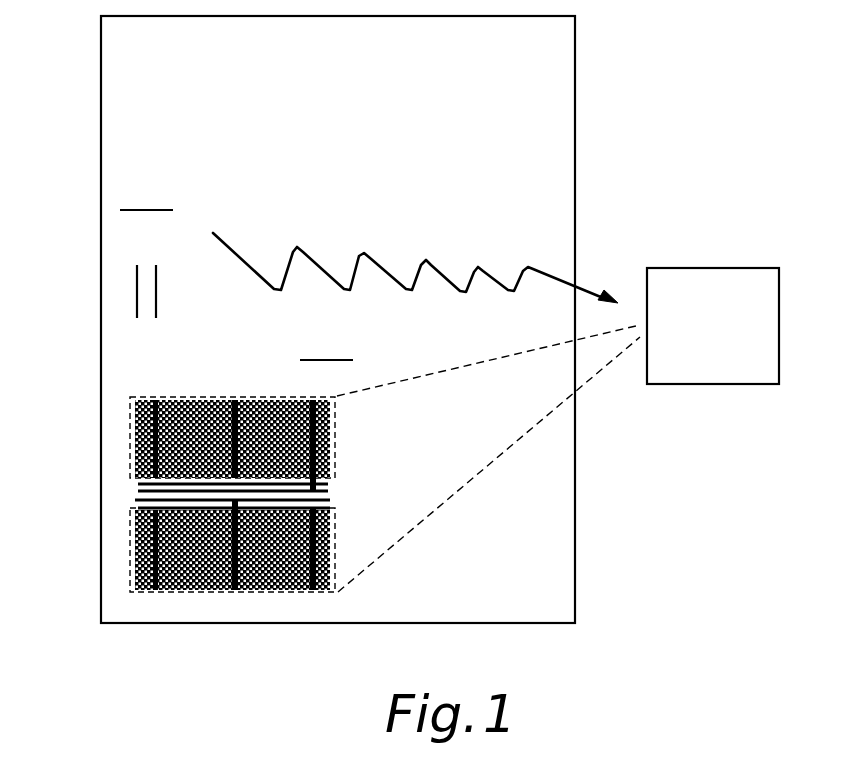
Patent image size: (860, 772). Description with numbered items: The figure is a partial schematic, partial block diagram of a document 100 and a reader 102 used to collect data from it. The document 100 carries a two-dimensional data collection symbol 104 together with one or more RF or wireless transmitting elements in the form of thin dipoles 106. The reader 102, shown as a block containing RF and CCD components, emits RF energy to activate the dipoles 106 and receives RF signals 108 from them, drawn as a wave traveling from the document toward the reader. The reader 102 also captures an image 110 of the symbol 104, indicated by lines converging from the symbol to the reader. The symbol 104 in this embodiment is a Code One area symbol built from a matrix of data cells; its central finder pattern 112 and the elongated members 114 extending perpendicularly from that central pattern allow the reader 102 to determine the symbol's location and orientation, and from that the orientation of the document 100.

The document 100 is at (575, 555).
The reader 102 is at (748, 385).
The two-dimensional data collection symbol 104 is at (216, 476).
The thin dipoles 106 is at (125, 210).
The RF signals 108 is at (447, 274).
The image 110 is at (530, 428).
The central finder pattern 112 is at (330, 491).
The elongated members 114 is at (313, 399).